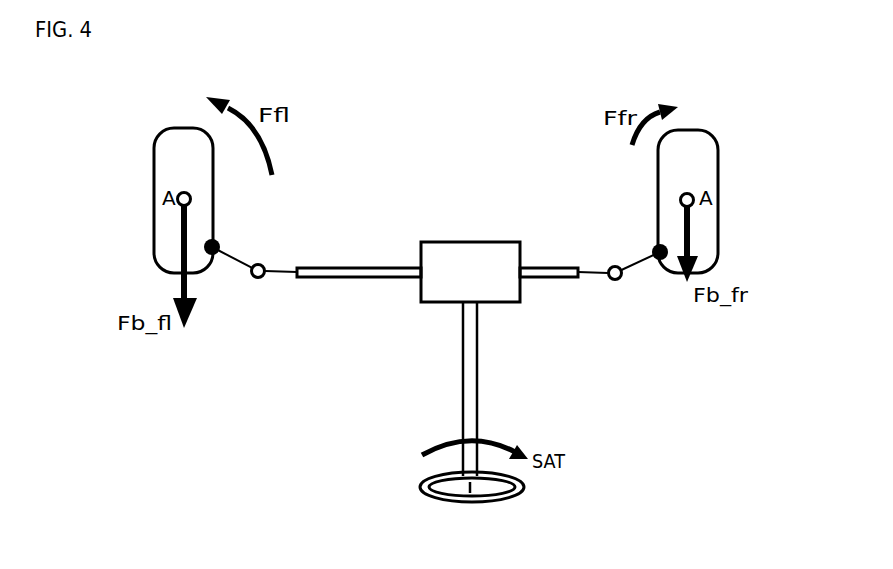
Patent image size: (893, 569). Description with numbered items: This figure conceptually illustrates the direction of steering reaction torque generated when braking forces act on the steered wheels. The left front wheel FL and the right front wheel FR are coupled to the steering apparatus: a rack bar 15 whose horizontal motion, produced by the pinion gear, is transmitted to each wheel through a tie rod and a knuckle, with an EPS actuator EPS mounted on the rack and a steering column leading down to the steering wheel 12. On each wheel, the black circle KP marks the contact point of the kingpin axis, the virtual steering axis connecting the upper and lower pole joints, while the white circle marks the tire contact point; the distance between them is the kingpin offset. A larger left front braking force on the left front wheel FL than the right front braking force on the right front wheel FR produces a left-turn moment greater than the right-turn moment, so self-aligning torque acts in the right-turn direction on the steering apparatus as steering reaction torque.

The steering wheel 12 is at (467, 503).
The rack bar 15 is at (310, 288).
The left front wheel FL is at (154, 158).
The right front wheel FR is at (718, 160).
The contact point of kingpin axis KP is at (436, 238).
The EPS actuator EPS is at (470, 272).